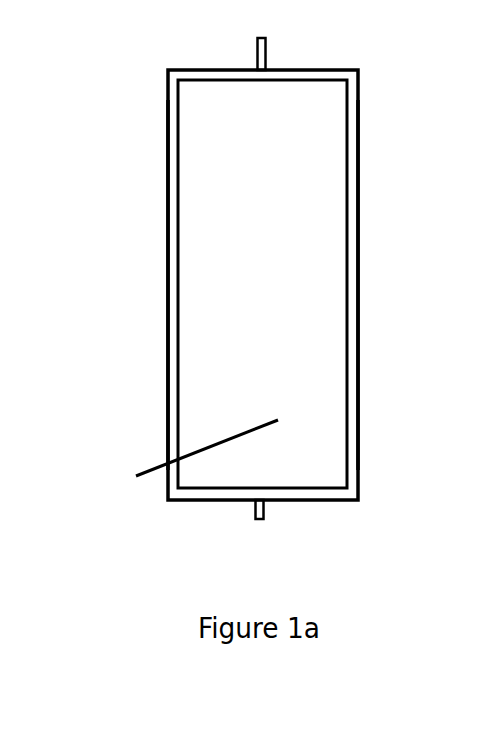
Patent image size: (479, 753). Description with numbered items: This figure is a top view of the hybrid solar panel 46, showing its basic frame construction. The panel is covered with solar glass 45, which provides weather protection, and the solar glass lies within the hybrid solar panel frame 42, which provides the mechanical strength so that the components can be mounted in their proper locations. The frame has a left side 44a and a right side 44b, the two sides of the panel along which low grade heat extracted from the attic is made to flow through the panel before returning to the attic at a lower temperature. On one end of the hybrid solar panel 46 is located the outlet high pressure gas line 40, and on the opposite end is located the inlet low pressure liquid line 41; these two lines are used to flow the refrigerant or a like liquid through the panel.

The outlet high pressure gas line 40 is at (279, 47).
The inlet low pressure liquid line 41 is at (267, 534).
The hybrid solar panel frame 42 is at (168, 385).
The HSC left side 44a is at (168, 182).
The HSC right side 44b is at (358, 421).
The solar glass plates 45 is at (178, 259).
The hybrid solar panel (HSP) 46 is at (187, 459).